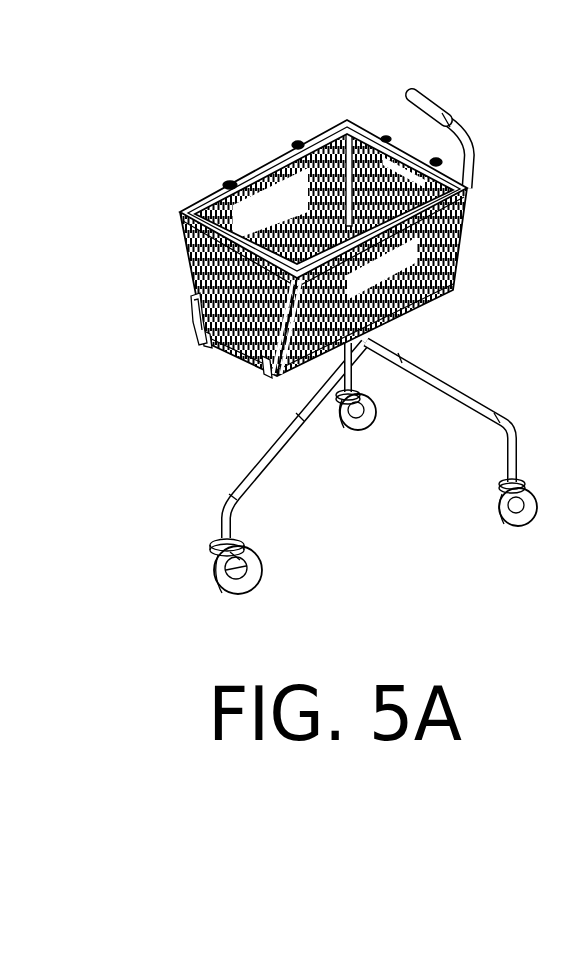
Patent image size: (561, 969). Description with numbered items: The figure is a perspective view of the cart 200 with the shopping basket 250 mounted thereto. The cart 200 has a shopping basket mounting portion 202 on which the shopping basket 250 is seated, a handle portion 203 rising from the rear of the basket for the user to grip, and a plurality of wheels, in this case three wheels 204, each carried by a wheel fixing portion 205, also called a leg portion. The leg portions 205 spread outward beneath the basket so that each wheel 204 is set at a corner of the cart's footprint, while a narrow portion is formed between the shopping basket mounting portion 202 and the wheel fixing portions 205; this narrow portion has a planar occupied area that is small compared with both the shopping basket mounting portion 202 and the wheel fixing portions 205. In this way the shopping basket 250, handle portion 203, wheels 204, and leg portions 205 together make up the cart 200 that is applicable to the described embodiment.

The cart 200 is at (230, 126).
The shopping basket 250 is at (192, 195).
The shopping basket mounting portion 202 is at (191, 313).
The handle portion 203 is at (436, 101).
The wheel 204 is at (265, 556).
The wheel fixing portion (leg portion) 205 is at (432, 386).